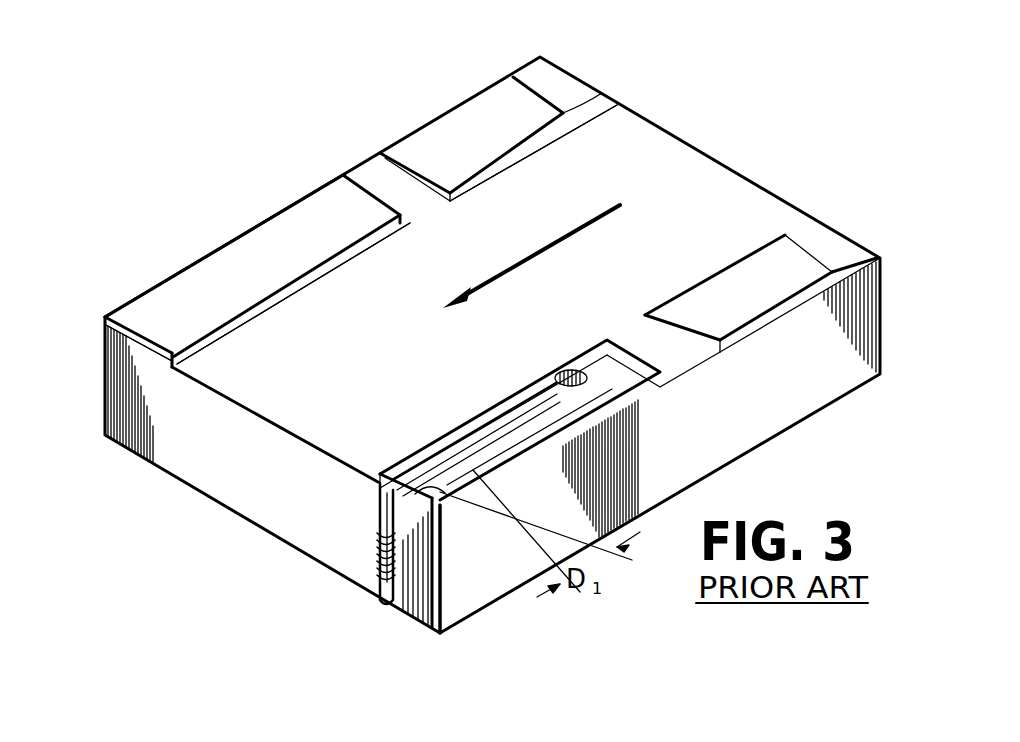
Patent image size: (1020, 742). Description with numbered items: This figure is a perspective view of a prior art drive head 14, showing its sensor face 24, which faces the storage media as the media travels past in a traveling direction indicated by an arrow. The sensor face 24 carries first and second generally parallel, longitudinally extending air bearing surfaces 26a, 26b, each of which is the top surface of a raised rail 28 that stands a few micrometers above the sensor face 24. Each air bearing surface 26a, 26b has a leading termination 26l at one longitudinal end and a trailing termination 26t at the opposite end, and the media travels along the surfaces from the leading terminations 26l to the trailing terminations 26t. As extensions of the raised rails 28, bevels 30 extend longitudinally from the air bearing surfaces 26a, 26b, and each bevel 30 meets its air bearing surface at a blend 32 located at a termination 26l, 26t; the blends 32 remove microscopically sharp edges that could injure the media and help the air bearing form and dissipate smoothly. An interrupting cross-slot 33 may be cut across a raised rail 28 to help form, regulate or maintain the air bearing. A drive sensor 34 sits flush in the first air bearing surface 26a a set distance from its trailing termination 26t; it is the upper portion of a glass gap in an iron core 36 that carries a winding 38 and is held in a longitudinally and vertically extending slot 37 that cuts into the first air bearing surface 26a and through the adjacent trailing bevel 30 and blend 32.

The drive head 14 is at (233, 483).
The sensor face 24 is at (656, 237).
The first air bearing surface 26a is at (598, 391).
The second air bearing surface 26b is at (244, 270).
The leading termination 26l is at (563, 113).
The trailing termination 26t is at (155, 337).
The raised rail 28 is at (486, 136).
The bevel 30 is at (104, 315).
The blend 32 is at (143, 330).
The interrupting cross-slot 33 is at (367, 177).
The drive sensor 34 is at (447, 447).
The iron core 36 is at (375, 583).
The slot 37 is at (413, 594).
The winding 38 is at (403, 556).